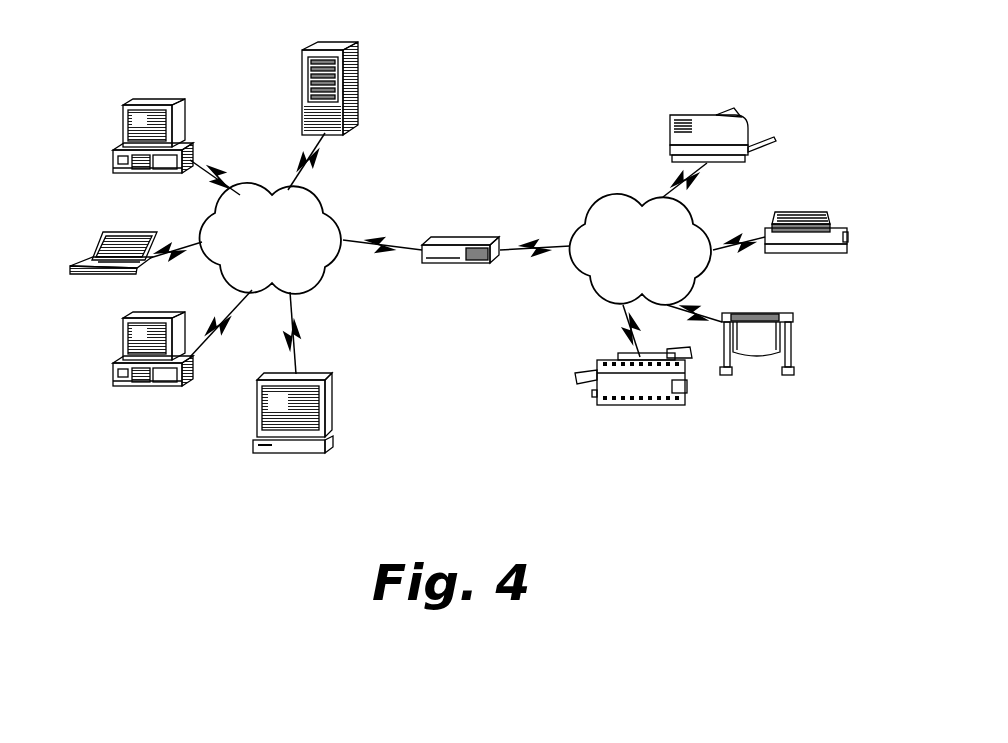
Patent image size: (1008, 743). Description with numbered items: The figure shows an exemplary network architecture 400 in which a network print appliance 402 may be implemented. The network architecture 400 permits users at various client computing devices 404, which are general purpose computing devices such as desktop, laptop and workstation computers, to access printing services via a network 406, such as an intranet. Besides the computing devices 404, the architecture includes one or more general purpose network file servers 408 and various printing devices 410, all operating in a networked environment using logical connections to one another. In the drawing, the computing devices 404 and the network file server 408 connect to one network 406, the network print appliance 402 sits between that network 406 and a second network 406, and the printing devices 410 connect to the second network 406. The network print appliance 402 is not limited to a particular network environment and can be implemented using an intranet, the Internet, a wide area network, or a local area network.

The network architecture 400 is at (603, 52).
The network print appliance 402 is at (462, 242).
The client computing devices 404 is at (143, 97).
The network 406 is at (292, 280).
The general purpose network file server 408 is at (304, 56).
The printing devices 410 is at (752, 129).